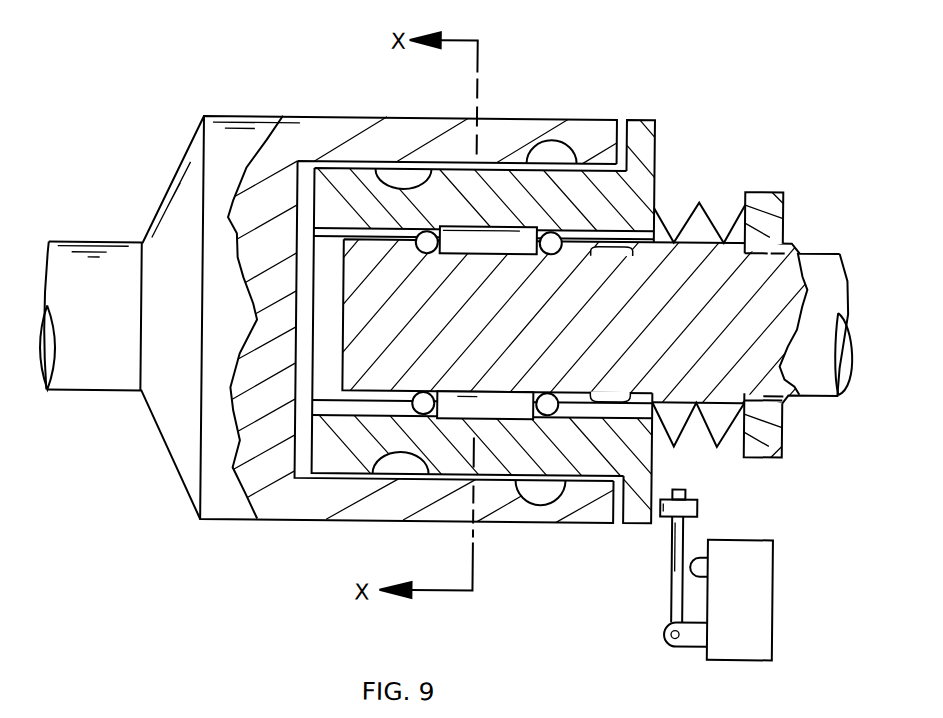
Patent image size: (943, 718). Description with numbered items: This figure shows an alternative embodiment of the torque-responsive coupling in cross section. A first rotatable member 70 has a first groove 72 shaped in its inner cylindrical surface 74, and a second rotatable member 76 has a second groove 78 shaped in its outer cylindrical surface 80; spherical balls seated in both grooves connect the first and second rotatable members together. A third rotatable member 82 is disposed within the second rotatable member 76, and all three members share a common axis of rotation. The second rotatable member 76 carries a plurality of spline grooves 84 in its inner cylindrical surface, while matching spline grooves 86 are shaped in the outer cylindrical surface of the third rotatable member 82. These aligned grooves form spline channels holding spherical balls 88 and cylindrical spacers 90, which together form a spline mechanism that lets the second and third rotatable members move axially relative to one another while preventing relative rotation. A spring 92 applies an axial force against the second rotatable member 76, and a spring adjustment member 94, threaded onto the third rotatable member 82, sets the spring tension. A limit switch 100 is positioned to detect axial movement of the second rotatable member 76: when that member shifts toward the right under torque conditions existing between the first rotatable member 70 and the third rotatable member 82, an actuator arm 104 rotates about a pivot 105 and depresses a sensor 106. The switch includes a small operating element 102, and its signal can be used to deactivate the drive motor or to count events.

The first rotatable member 70 is at (171, 418).
The first groove 72 is at (546, 489).
The inner cylindrical surface 74 is at (346, 462).
The second rotatable member 76 is at (643, 139).
The second groove 78 is at (484, 313).
The outer cylindrical surface 80 is at (511, 186).
The third rotatable member 82 is at (821, 261).
The spline grooves 84 is at (298, 247).
The spline grooves 86 is at (598, 250).
The spherical balls 88 is at (430, 247).
The cylindrical spacers 90 is at (489, 250).
The spring 92 is at (702, 199).
The spring adjustment member 94 is at (773, 203).
The limit switch 100 is at (739, 622).
The handle 102 is at (694, 503).
The actuator arm 104 is at (674, 544).
The pivot 105 is at (672, 636).
The sensor 106 is at (694, 570).